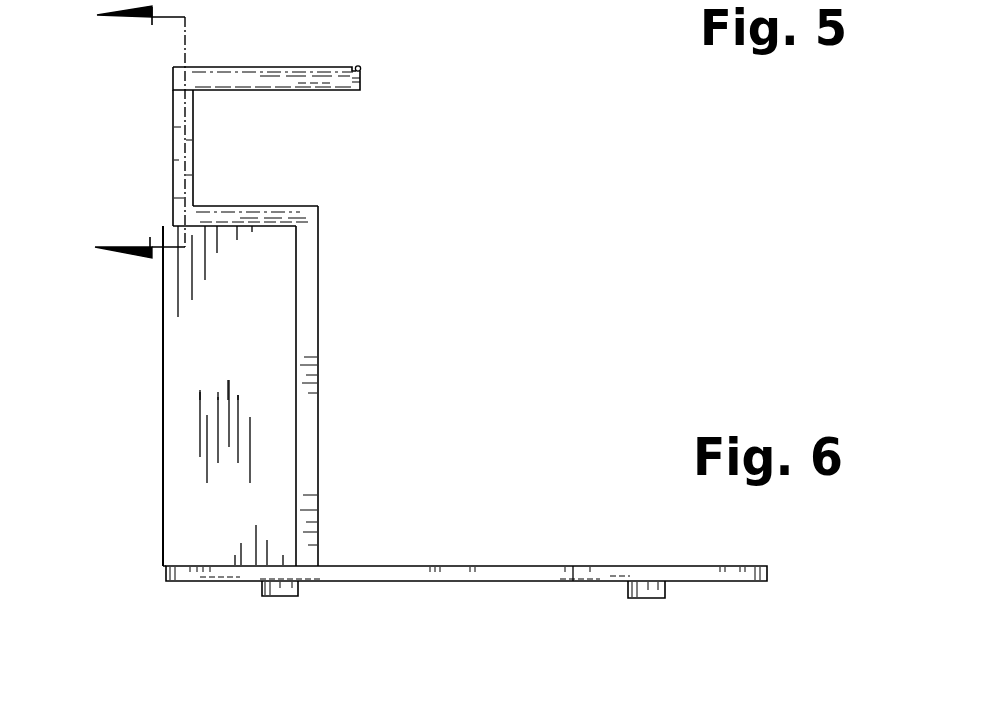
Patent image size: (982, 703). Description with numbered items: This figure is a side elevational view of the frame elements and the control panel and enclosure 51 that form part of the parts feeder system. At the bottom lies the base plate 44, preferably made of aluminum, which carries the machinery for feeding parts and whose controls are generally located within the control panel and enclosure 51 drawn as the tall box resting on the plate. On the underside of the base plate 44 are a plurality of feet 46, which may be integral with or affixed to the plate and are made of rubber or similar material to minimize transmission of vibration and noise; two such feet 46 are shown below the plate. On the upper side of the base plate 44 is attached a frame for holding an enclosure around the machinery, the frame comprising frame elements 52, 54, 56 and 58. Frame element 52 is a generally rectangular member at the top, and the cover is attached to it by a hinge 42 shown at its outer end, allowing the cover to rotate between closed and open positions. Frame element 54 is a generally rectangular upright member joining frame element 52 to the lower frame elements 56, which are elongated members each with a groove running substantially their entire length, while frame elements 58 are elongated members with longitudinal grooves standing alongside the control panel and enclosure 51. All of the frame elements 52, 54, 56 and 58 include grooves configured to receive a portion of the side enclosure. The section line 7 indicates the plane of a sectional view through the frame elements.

The section line 7- 7 is at (132, 134).
The hinge 42 is at (361, 66).
The base plate 44 is at (420, 582).
The feet 46 is at (277, 597).
The control panel and enclosure 51 is at (241, 347).
The frame element 52 is at (237, 72).
The frame element 54 is at (173, 158).
The frame elements 56 is at (242, 206).
The frame elements 58 is at (310, 250).